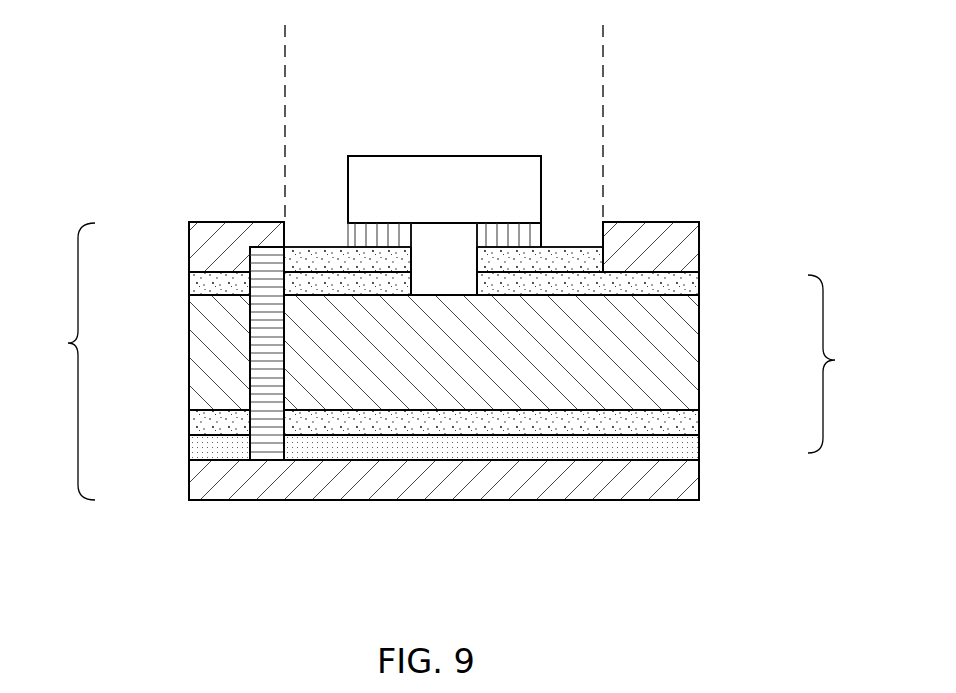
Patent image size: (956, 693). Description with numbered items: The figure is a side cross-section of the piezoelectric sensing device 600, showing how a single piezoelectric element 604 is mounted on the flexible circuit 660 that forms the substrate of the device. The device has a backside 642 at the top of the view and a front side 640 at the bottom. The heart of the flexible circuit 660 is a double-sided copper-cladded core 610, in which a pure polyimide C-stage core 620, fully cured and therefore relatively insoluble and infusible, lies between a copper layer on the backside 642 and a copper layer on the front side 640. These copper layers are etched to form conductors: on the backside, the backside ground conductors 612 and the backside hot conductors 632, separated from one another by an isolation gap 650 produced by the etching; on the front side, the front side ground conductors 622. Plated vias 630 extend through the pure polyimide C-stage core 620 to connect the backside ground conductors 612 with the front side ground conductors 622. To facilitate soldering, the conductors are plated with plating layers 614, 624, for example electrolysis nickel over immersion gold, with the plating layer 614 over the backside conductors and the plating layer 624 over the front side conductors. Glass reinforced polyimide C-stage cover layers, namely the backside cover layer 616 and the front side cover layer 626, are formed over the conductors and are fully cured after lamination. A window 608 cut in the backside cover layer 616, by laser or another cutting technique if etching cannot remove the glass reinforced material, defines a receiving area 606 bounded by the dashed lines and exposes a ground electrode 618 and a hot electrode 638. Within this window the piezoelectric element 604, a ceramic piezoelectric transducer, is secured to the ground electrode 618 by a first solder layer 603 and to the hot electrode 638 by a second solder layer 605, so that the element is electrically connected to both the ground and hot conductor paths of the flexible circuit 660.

The piezoelectric sensing device 600 is at (217, 70).
The first solder layer 603 is at (347, 227).
The piezoelectric element 604 is at (455, 156).
The second solder layer 605 is at (549, 227).
The receiving area 606 is at (604, 45).
The window 608 is at (563, 205).
The double-sided copper-cladded core 610 is at (844, 364).
The backside ground conductor 612 is at (189, 285).
The plating layer 614 is at (303, 250).
The backside cover layer 616 is at (189, 248).
The ground electrode 618 is at (325, 243).
The pure polyimide C-stage core 620 is at (700, 362).
The front side ground conductor 622 is at (700, 417).
The plating layer 624 is at (700, 447).
The front side cover layer 626 is at (700, 481).
The plated via 630 is at (250, 365).
The backside hot conductor 632 is at (700, 284).
The hot electrode 638 is at (552, 247).
The front side 640 is at (682, 530).
The backside 642 is at (708, 202).
The isolation gap 650 is at (437, 237).
The flexible circuit 660 is at (60, 361).